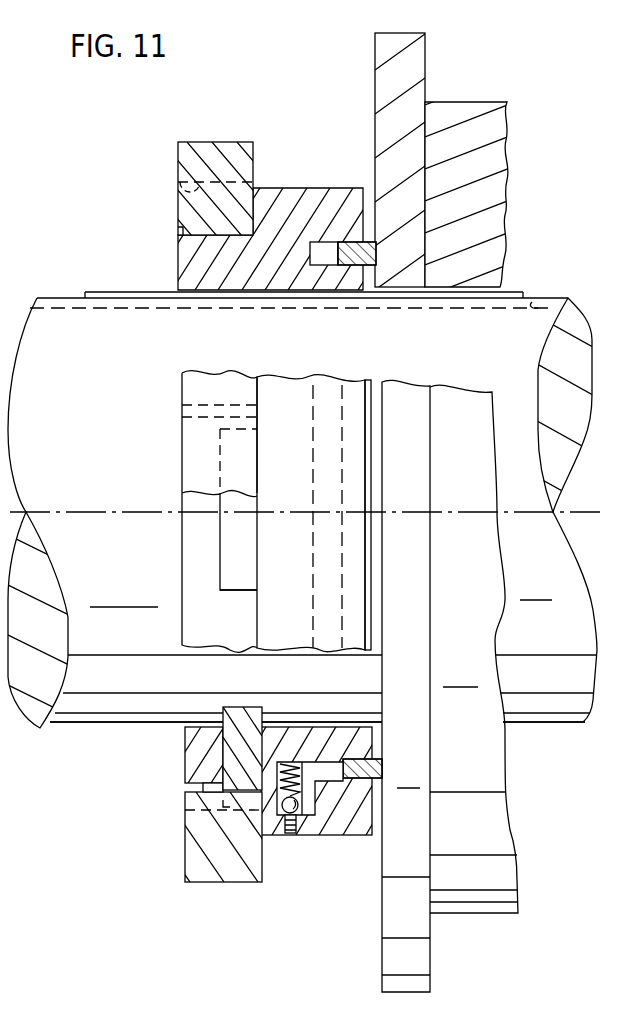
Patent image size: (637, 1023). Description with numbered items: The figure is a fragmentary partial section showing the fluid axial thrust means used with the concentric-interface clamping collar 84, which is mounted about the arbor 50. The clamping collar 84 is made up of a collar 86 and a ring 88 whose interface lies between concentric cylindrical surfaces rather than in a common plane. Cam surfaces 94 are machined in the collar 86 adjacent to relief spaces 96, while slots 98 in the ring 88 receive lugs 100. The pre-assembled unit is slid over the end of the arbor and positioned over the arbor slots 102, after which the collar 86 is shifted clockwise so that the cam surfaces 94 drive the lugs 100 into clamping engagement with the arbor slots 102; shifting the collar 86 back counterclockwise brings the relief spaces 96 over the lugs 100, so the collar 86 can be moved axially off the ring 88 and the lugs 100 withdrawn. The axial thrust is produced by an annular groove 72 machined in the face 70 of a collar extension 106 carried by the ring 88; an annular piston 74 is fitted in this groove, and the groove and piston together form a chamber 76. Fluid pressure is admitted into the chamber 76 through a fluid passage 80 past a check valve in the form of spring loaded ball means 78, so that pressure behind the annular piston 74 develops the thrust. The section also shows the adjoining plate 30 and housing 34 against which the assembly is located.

The support plate 30 is at (418, 73).
The housing 34 is at (492, 138).
The arbor 50 is at (555, 550).
The face of collar extension 70 is at (372, 817).
The annular groove 72 is at (382, 760).
The annular piston 74 is at (378, 256).
The chamber 76 is at (332, 765).
The spring loaded ball means 78 is at (307, 813).
The fluid passage 80 is at (305, 767).
The clamping collar 84 is at (271, 98).
The collar 86 is at (185, 163).
The ring 88 is at (183, 268).
The cam surfaces 94 is at (203, 777).
The relief spaces 96 is at (177, 197).
The slots 98 is at (245, 587).
The lugs 100 is at (248, 552).
The arbor slots 102 is at (242, 708).
The collar extension 106 is at (306, 200).